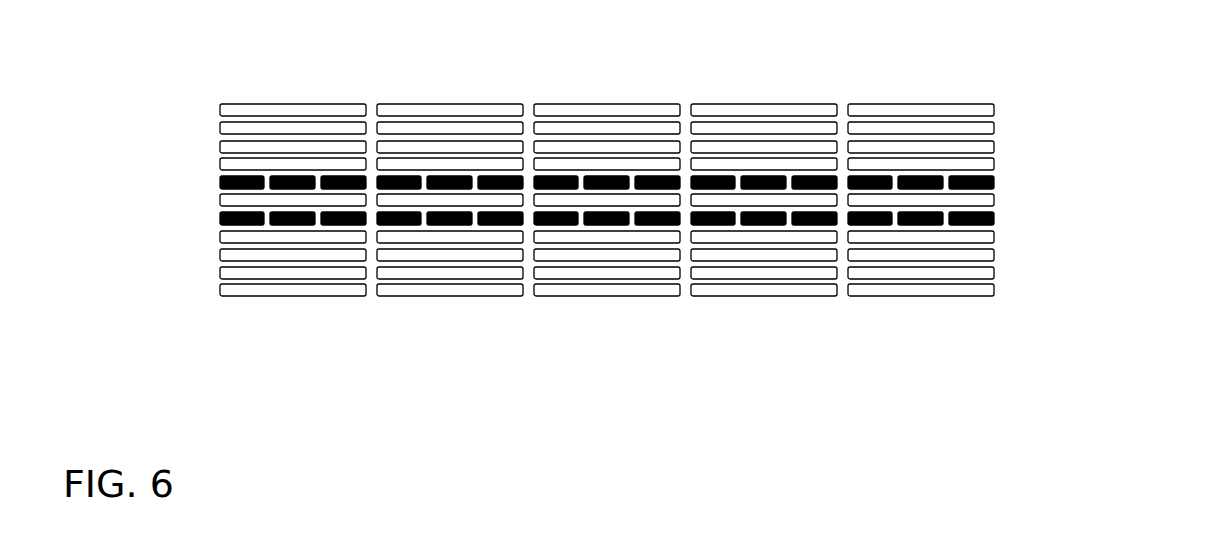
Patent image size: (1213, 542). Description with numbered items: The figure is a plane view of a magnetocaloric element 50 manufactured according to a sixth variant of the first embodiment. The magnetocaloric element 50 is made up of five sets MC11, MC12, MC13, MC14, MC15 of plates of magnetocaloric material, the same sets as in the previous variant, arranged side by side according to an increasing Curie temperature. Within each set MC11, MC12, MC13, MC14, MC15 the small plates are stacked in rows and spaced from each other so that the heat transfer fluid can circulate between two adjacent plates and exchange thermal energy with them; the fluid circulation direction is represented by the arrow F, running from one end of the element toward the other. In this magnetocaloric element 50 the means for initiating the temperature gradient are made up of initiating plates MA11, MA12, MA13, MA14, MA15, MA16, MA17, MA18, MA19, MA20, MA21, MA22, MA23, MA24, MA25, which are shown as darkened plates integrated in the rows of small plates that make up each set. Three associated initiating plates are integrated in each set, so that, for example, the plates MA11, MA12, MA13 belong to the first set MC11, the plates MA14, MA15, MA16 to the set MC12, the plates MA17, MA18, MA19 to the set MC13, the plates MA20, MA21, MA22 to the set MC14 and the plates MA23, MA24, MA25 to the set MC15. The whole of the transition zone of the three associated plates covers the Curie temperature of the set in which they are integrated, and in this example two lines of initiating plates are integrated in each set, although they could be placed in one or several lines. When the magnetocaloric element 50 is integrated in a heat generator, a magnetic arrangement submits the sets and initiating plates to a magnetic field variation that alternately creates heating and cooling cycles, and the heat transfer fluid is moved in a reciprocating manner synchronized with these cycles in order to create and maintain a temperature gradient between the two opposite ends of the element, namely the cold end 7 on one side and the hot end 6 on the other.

The magnetocaloric element 50 is at (1084, 147).
The hot end 6 is at (1027, 237).
The cold end 7 is at (190, 208).
The fluid circulation direction F is at (92, 209).
The set of plates MC11 is at (296, 83).
The set of plates MC12 is at (471, 83).
The set of plates MC13 is at (628, 79).
The set of plates MC14 is at (773, 79).
The set of plates MC15 is at (934, 79).
The initiating plate MA11 is at (242, 189).
The initiating plate MA12 is at (282, 189).
The initiating plate MA13 is at (333, 189).
The initiating plate MA14 is at (399, 189).
The initiating plate MA15 is at (457, 189).
The initiating plate MA16 is at (490, 189).
The initiating plate MA17 is at (556, 189).
The initiating plate MA18 is at (604, 189).
The initiating plate MA19 is at (647, 189).
The initiating plate MA20 is at (713, 189).
The initiating plate MA21 is at (761, 189).
The initiating plate MA22 is at (804, 189).
The initiating plate MA23 is at (870, 189).
The initiating plate MA24 is at (918, 189).
The initiating plate MA25 is at (961, 189).